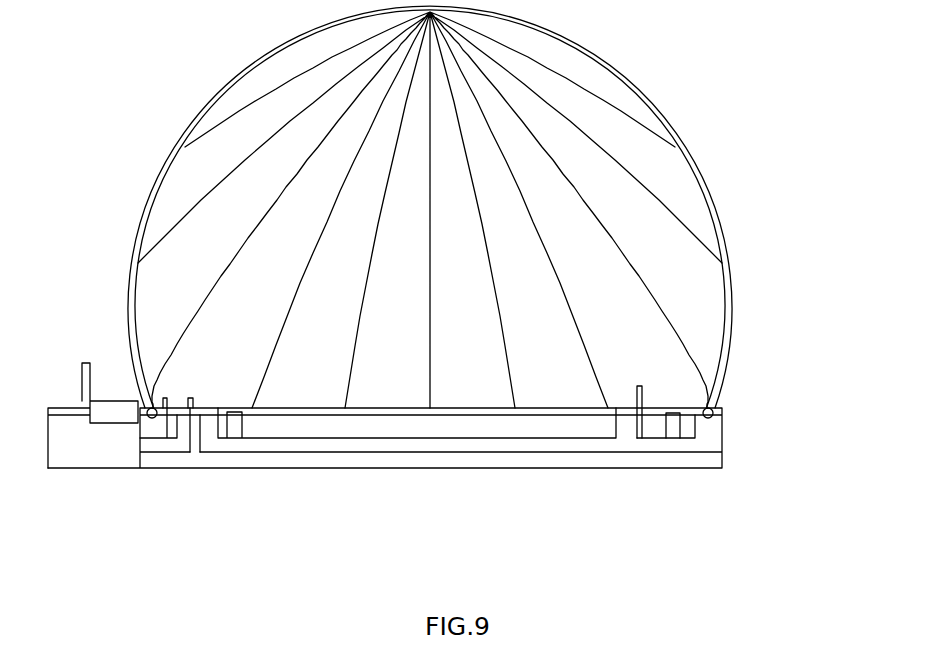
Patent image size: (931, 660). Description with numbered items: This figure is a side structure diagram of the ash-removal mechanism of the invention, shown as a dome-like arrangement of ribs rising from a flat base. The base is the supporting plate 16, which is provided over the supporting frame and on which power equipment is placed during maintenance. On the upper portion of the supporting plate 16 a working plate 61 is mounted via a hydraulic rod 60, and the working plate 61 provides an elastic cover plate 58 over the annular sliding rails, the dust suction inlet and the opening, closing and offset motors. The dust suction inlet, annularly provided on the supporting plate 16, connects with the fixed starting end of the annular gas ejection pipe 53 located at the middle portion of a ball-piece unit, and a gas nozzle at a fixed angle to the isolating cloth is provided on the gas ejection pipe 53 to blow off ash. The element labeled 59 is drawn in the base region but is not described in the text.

The supporting plate 16 is at (275, 460).
The annular gas ejection pipe 53 is at (153, 445).
The elastic cover plate 58 is at (641, 400).
The slide groove 59 is at (622, 432).
The hydraulic rod 60 is at (672, 432).
The working plate 61 is at (410, 418).